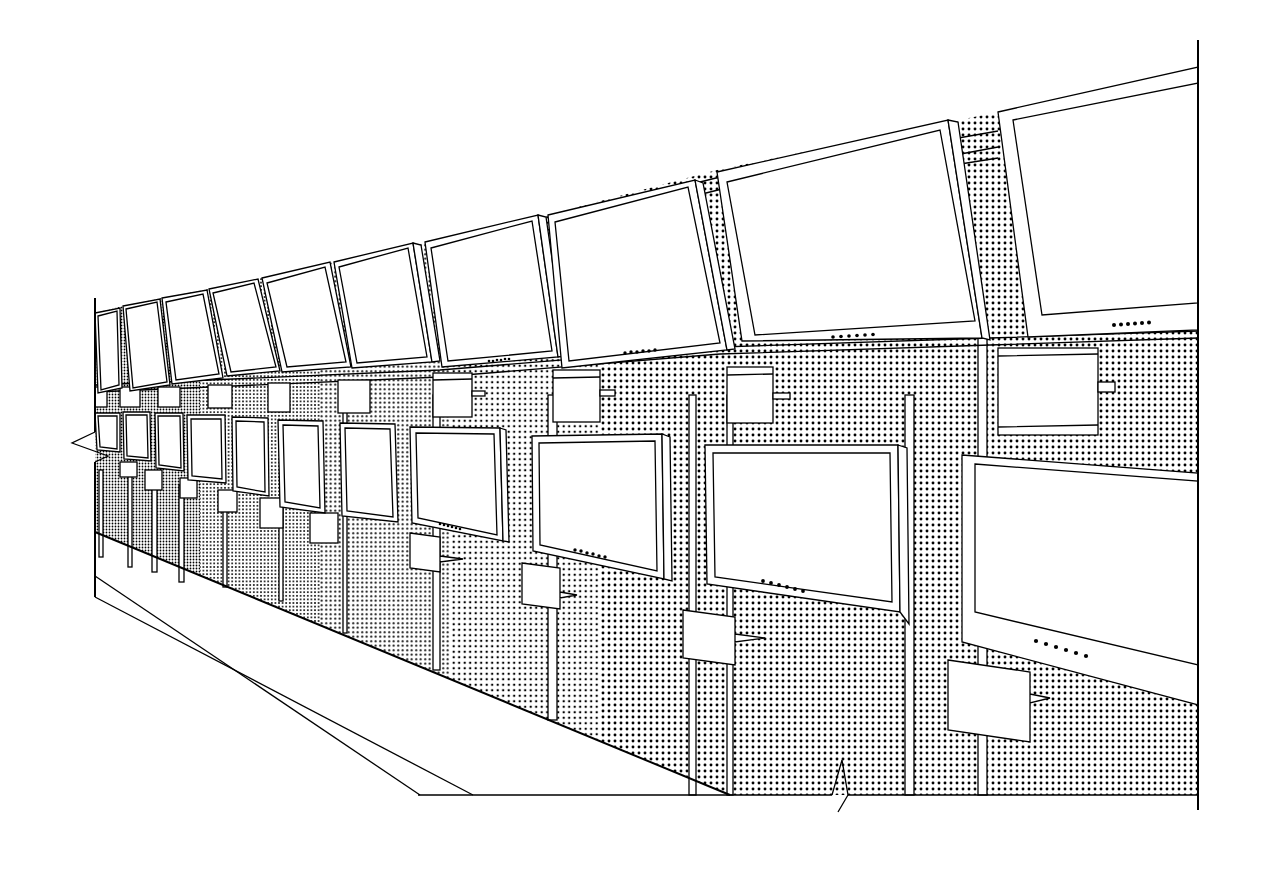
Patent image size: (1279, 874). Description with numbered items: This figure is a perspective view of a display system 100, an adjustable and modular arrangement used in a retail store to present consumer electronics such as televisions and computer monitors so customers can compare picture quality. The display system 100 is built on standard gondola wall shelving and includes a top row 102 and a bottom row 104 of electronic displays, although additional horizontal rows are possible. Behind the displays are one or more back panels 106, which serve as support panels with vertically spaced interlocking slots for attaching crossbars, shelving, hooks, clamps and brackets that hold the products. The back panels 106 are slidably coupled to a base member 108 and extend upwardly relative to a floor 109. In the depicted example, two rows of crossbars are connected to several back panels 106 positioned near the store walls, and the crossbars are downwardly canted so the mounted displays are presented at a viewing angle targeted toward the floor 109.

The display system 100 is at (150, 116).
The top row 102 is at (1209, 181).
The bottom row 104 is at (1213, 564).
The back panel 106 is at (522, 690).
The base member 108 is at (412, 663).
The floor 109 is at (284, 696).